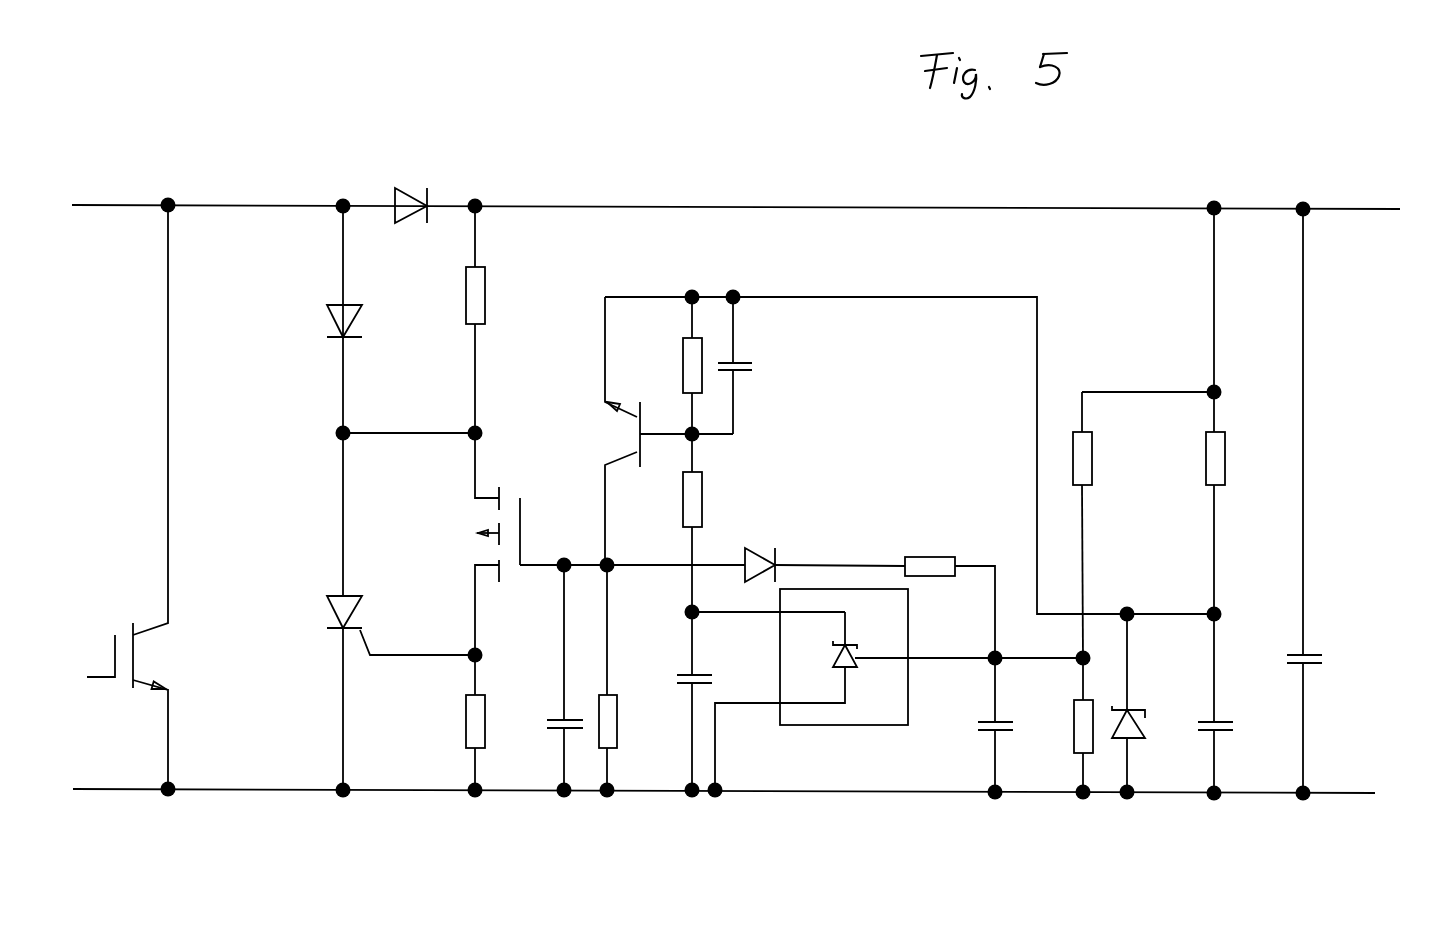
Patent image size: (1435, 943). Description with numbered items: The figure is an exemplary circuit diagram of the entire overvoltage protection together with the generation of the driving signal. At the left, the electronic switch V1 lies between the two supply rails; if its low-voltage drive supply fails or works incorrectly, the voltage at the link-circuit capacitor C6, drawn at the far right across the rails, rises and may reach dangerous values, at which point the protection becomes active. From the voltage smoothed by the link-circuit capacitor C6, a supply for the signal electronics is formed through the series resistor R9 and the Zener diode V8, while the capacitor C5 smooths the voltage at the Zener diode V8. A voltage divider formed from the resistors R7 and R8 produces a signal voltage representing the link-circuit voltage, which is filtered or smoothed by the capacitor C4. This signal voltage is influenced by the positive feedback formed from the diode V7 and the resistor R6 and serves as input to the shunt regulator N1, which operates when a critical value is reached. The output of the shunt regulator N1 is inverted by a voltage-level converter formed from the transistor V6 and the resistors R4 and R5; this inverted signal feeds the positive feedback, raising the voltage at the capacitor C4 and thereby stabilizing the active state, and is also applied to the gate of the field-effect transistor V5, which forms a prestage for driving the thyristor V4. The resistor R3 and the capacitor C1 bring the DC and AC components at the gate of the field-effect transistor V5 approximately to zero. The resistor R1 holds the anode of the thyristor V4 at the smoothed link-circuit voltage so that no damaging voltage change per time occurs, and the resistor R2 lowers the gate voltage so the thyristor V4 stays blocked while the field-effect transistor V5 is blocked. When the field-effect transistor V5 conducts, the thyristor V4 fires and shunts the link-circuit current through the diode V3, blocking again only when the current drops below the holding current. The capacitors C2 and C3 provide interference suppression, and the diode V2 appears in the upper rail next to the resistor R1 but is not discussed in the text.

The electronic switch V1 is at (147, 497).
The diode V2 is at (409, 193).
The diode V3 is at (361, 319).
The thyristor V4 is at (401, 611).
The field-effect transistor V5 is at (472, 544).
The transistor V6 is at (636, 431).
The diode V7 is at (823, 553).
The Zener diode V8 is at (1145, 703).
The resistor R1 is at (494, 319).
The resistor R2 is at (455, 722).
The resistor R3 is at (627, 677).
The resistor R4 is at (671, 365).
The resistor R5 is at (711, 523).
The resistor R6 is at (950, 591).
The resistor R7 is at (1101, 525).
The resistor R8 is at (1063, 725).
The series resistor R9 is at (1234, 411).
The capacitor C1 is at (547, 677).
The capacitor C2 is at (710, 700).
The capacitor C3 is at (751, 365).
The capacitor C4 is at (980, 725).
The capacitor C5 is at (1231, 703).
The link-circuit capacitor C6 is at (1319, 501).
The shunt regulator N1 is at (844, 669).